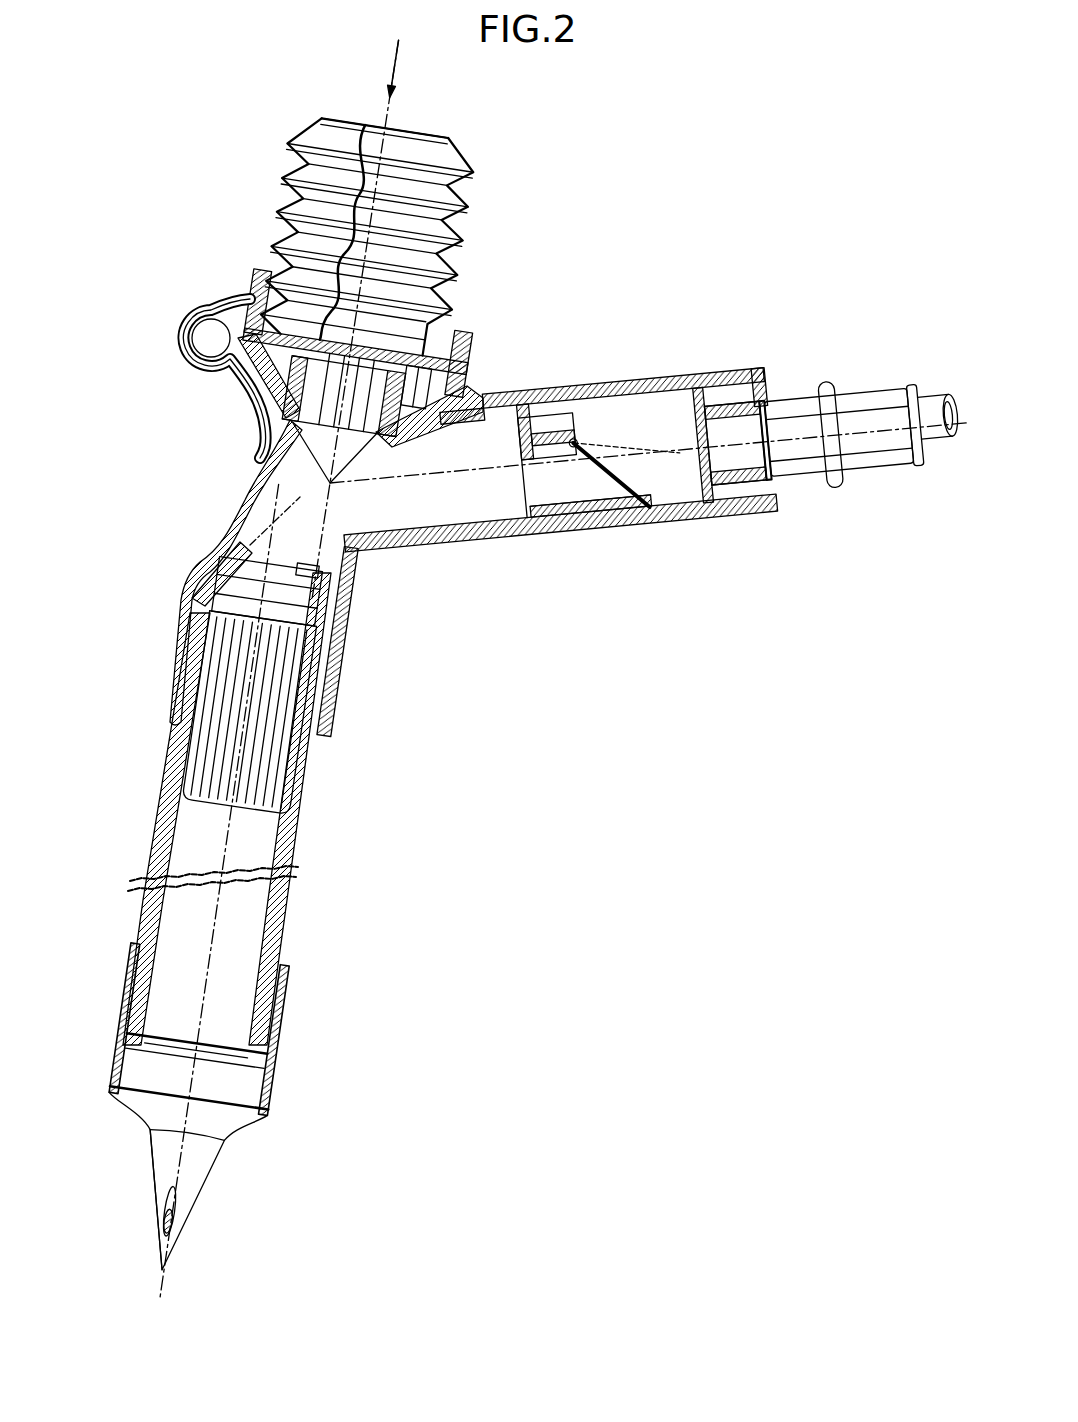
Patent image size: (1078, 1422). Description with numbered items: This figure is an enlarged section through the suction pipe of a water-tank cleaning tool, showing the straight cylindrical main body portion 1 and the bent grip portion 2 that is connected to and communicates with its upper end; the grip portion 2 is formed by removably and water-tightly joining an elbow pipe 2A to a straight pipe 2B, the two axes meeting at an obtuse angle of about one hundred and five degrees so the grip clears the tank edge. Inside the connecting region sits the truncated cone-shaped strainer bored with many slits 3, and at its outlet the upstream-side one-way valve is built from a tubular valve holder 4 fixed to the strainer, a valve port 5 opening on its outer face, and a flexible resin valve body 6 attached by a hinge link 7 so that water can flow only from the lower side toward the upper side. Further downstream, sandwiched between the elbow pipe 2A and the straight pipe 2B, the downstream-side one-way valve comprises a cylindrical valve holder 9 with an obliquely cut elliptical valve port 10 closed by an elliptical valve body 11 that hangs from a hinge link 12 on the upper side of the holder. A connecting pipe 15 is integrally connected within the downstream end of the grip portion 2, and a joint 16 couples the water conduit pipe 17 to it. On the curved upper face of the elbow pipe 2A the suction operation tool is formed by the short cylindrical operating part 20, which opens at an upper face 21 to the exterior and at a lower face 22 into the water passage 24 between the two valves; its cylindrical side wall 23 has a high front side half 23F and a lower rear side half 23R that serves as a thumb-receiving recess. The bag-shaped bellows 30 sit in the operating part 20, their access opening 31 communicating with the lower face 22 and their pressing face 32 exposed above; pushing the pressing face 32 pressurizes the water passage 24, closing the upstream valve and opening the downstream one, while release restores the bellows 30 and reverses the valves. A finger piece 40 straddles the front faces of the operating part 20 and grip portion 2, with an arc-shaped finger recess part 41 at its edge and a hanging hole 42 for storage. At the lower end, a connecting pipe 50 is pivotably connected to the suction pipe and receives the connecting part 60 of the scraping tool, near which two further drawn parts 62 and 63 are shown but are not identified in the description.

The main body portion 1 is at (312, 785).
The grip portion 2 is at (520, 620).
The elbow pipe 2A is at (448, 548).
The straight pipe 2B is at (525, 548).
The slits 3 is at (244, 803).
The valve holder 4 is at (262, 572).
The valve port 5 is at (317, 560).
The valve body 6 is at (272, 538).
The hinge link 7 is at (231, 547).
The valve holder 9 is at (545, 512).
The valve port 10 is at (632, 488).
The valve body 11 is at (580, 442).
The hinge link 12 is at (555, 420).
The connecting pipe 15 is at (737, 500).
The joint 16 is at (858, 473).
The water conduit pipe 17 is at (940, 445).
The operating part 20 is at (253, 265).
The upper face 21 is at (445, 328).
The lower face 22 is at (378, 435).
The cylindrical side wall 23 is at (210, 340).
The front side half 23F is at (248, 258).
The rear side half 23R is at (492, 345).
The water passage 24 is at (454, 474).
The bellows 30 is at (293, 158).
The access opening 31 is at (344, 404).
The pressing face 32 is at (345, 118).
The finger piece 40 is at (198, 300).
The finger recess part 41 is at (250, 425).
The hanging hole 42 is at (189, 343).
The connecting pipe 50 is at (128, 972).
The connecting part 60 is at (270, 1098).
The needle 62 is at (172, 1248).
The sheath cone 63 is at (162, 1158).